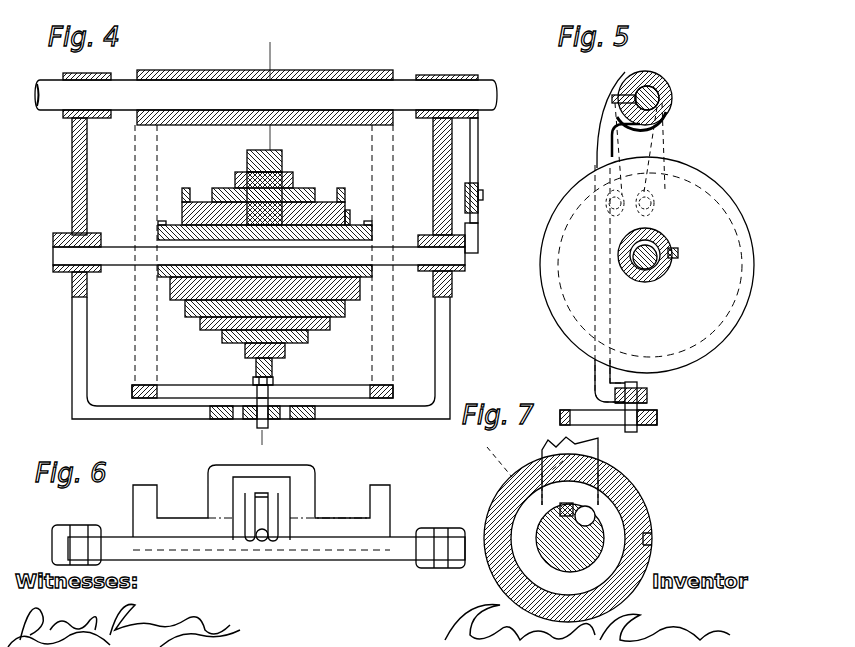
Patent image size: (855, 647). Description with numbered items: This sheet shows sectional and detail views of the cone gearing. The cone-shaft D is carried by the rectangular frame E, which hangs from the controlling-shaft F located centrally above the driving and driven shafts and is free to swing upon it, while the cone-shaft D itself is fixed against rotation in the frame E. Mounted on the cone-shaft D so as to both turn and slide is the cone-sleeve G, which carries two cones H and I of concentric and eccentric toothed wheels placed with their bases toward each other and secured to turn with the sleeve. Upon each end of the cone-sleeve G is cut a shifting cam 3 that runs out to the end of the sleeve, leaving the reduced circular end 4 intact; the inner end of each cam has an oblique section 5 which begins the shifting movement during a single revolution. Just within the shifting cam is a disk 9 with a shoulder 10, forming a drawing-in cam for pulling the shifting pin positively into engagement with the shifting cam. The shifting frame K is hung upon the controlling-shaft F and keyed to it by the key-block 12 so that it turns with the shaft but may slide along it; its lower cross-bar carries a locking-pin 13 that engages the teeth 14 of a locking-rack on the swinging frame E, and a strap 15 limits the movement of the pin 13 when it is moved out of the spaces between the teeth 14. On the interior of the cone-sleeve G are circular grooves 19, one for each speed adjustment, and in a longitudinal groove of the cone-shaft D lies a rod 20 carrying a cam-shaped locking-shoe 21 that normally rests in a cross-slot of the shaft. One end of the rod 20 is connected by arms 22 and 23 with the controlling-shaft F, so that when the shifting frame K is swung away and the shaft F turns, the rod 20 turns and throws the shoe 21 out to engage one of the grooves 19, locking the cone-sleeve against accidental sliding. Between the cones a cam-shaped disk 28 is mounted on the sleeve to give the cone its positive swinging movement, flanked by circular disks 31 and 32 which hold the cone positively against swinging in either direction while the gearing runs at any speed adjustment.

In FIG. 4, the shifting cam 3 is at (265, 220).
In FIG. 4, the reduced circular end 4 is at (166, 236).
In FIG. 4, the oblique section 5 is at (265, 243).
In FIG. 4, the disk 9 is at (187, 200).
In FIG. 4, the shoulder 10 is at (350, 215).
In FIG. 5, the key-block 12 is at (612, 99).
In FIG. 4, the locking-pin 13 is at (270, 426).
In FIG. 5, the locking-pin 13 is at (640, 408).
In FIG. 6, the locking-pin 13 is at (260, 541).
In FIG. 4, the teeth 14 is at (240, 414).
In FIG. 5, the teeth 14 is at (606, 410).
In FIG. 6, the teeth 14 is at (261, 511).
In FIG. 5, the strap 15 is at (605, 418).
In FIG. 6, the strap 15 is at (288, 476).
In FIG. 4, the circular grooves 19 is at (293, 222).
In FIG. 5, the circular grooves 19 is at (667, 265).
In FIG. 7, the circular grooves 19 is at (613, 535).
In FIG. 4, the rod 20 is at (55, 242).
In FIG. 5, the rod 20 is at (655, 240).
In FIG. 7, the rod 20 is at (548, 492).
In FIG. 4, the locking-shoe 21 is at (253, 220).
In FIG. 5, the locking-shoe 21 is at (678, 253).
In FIG. 7, the locking-shoe 21 is at (580, 511).
In FIG. 4, the arm 22 is at (478, 232).
In FIG. 5, the arm 22 is at (656, 216).
In FIG. 7, the arm 22 is at (600, 444).
In FIG. 4, the arm 23 is at (478, 167).
In FIG. 5, the arm 23 is at (664, 148).
In FIG. 4, the cam-shaped disk 28 is at (268, 155).
In FIG. 5, the cam-shaped disk 28 is at (647, 265).
In FIG. 4, the circular disk 31 is at (252, 360).
In FIG. 4, the circular disk 32 is at (282, 351).
In FIG. 4, the cone-shaft D is at (136, 266).
In FIG. 5, the cone-shaft D is at (645, 270).
In FIG. 7, the cone-shaft D is at (536, 534).
In FIG. 4, the frame E is at (445, 322).
In FIG. 5, the frame E is at (660, 419).
In FIG. 6, the frame E is at (406, 582).
In FIG. 4, the controlling-shaft F is at (53, 79).
In FIG. 5, the controlling-shaft F is at (660, 102).
In FIG. 4, the cone-sleeve G is at (351, 283).
In FIG. 5, the cone-sleeve G is at (636, 262).
In FIG. 7, the cone-sleeve G is at (615, 533).
In FIG. 4, the cone H is at (222, 182).
In FIG. 4, the cone I is at (329, 187).
In FIG. 4, the shifting frame K is at (347, 382).
In FIG. 5, the shifting frame K is at (605, 124).
In FIG. 6, the shifting frame K is at (358, 512).